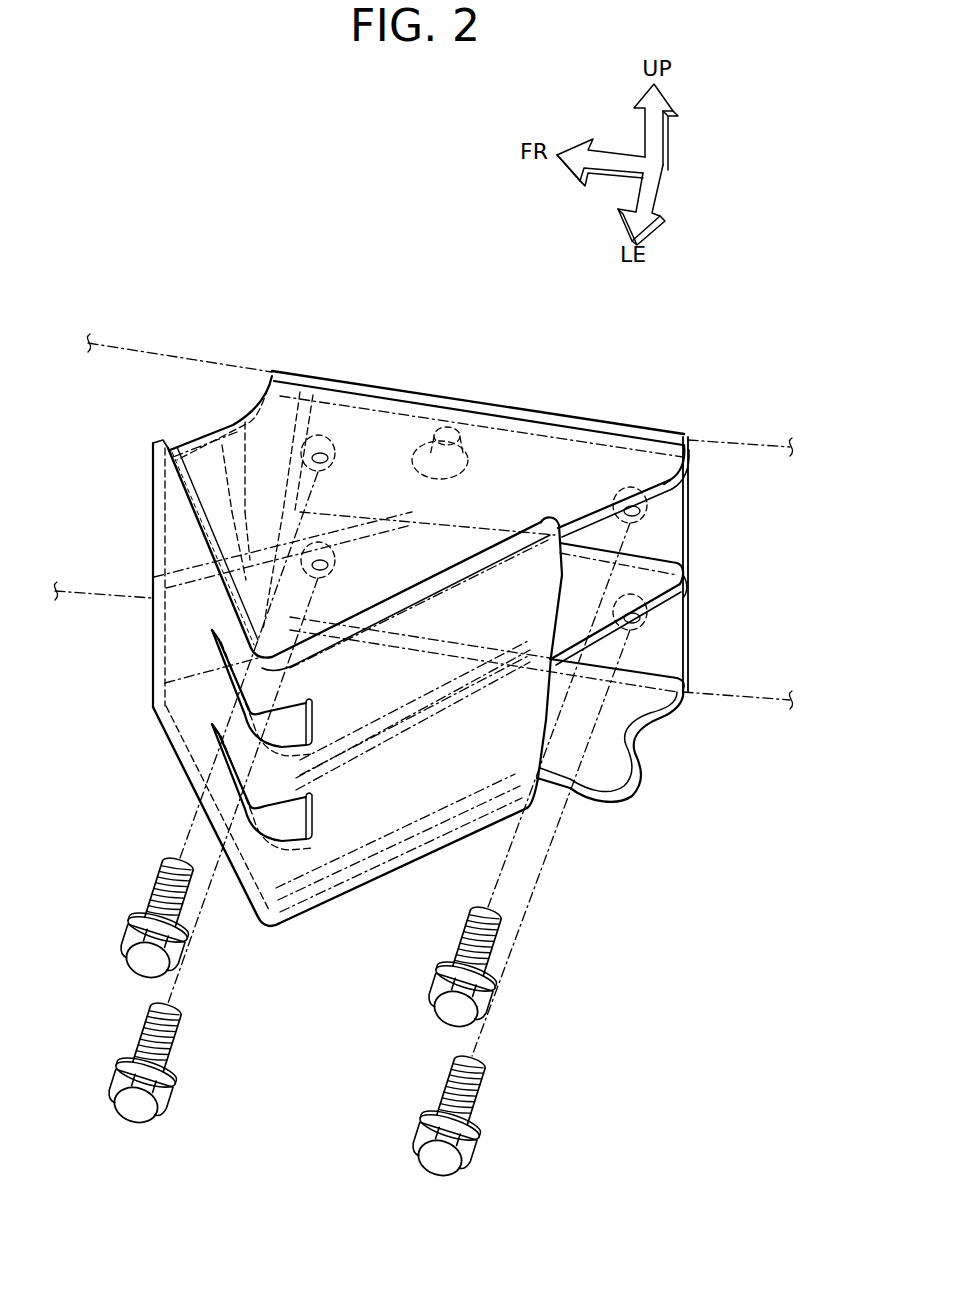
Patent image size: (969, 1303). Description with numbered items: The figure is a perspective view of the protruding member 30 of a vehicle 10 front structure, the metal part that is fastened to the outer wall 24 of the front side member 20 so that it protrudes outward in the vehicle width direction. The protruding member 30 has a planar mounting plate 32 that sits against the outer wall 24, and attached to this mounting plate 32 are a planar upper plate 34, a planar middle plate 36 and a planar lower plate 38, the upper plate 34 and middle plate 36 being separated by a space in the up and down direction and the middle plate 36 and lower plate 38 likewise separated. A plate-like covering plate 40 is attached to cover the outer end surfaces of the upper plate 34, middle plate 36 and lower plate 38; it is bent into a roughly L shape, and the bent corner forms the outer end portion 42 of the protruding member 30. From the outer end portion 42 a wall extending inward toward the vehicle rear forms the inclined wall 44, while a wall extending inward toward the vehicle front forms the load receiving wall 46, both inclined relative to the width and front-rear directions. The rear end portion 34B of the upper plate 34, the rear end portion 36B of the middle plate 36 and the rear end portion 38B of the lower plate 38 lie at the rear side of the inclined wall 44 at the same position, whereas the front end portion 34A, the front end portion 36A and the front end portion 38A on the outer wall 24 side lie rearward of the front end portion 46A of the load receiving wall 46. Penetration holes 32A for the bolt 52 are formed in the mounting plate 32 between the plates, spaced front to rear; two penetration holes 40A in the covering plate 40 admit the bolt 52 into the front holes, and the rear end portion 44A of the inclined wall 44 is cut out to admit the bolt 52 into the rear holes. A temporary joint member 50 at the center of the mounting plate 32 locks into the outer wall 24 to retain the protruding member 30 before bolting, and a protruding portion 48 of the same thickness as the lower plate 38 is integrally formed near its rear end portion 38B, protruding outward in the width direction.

The vehicle 10 is at (584, 970).
The front side member 20 is at (140, 340).
The outer wall 24 is at (92, 598).
The protruding member 30 is at (150, 741).
The mounting plate 32 is at (668, 522).
The penetration holes 32A is at (322, 450).
The upper plate 34 is at (605, 452).
The front end portion of the upper plate 34A is at (264, 385).
The rear end portion of the upper plate 34B is at (689, 447).
The middle plate 36 is at (660, 578).
The front end portion of the middle plate 36A is at (302, 392).
The rear end portion of the middle plate 36B is at (681, 595).
The lower plate 38 is at (643, 717).
The front end portion of the lower plate 38A is at (228, 448).
The rear end portion of the lower plate 38B is at (677, 715).
The covering plate 40 is at (336, 848).
The penetration holes 40A is at (288, 852).
The outer end portion 42 is at (268, 876).
The inclined wall 44 is at (407, 800).
The rear end portion of the covering plate 44A is at (565, 545).
The load receiving wall 46 is at (182, 643).
The front end portion of the load receiving wall 46A is at (150, 516).
The protruding portion 48 is at (612, 773).
The temporary joint member 50 is at (452, 452).
The bolt 52 is at (135, 964).